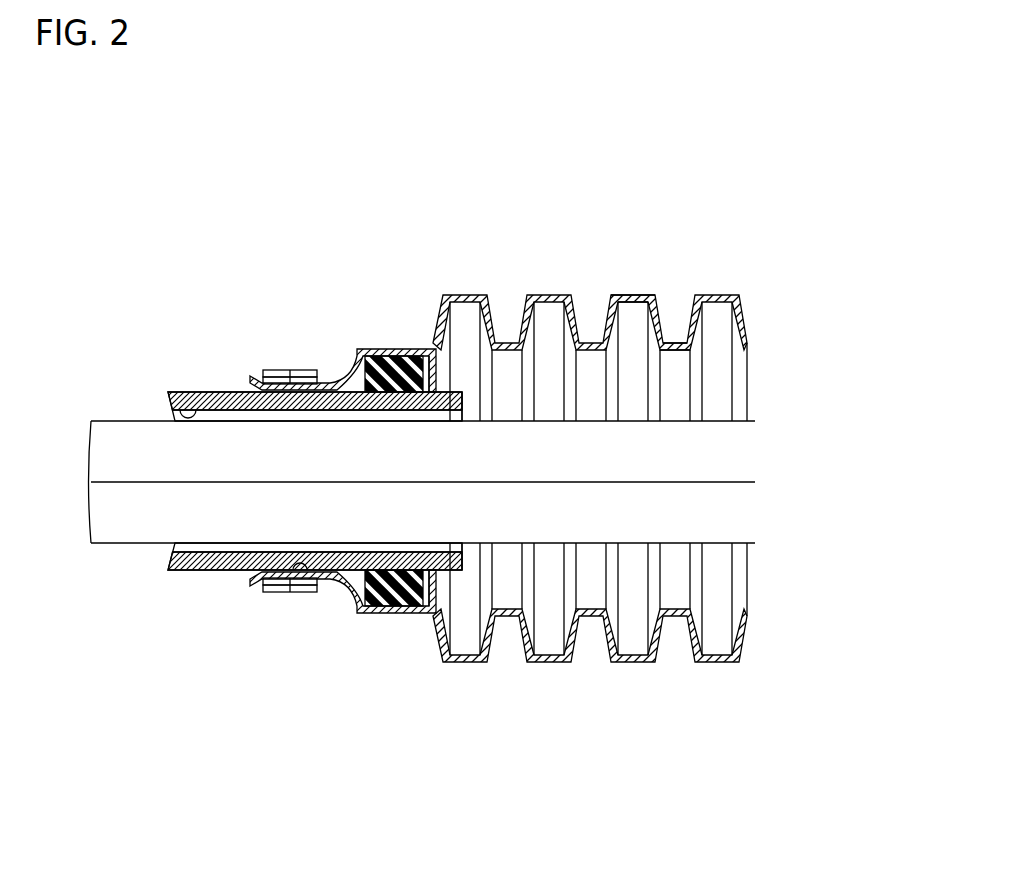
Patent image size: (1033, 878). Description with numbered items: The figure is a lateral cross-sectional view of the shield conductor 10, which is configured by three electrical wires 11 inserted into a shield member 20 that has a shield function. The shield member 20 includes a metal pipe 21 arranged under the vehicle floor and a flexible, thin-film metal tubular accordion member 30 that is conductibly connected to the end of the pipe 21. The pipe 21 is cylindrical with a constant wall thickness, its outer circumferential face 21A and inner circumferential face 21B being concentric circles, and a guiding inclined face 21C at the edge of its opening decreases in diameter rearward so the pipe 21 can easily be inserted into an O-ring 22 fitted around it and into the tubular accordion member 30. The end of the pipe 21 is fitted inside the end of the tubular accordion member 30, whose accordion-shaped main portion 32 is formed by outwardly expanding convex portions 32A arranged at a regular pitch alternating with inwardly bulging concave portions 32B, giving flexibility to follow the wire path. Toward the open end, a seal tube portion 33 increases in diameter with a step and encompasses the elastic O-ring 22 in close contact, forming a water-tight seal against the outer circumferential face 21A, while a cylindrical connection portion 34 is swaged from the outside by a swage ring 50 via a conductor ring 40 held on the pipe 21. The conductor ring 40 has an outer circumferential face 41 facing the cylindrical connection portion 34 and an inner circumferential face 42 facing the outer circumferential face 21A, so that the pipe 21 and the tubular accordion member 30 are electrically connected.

The shield conductor 10 is at (276, 212).
The electrical wire 11 is at (112, 432).
The shield member 20 is at (533, 141).
The pipe 21 is at (326, 377).
The outer circumferential face 21A is at (210, 392).
The inner circumferential face 21B is at (239, 435).
The guiding inclined face 21C is at (435, 434).
The O-ring 22 is at (393, 368).
The tubular accordion member 30 is at (537, 278).
The main portion 32 is at (505, 667).
The convex portion 32A is at (639, 252).
The concave portion 32B is at (687, 290).
The seal tube portion 33 is at (393, 614).
The cylindrical connection portion 34 is at (343, 343).
The conductor ring 40 is at (322, 648).
The outer circumferential face 41 is at (286, 613).
The inner circumferential face 42 is at (291, 613).
The swage ring 50 is at (285, 371).